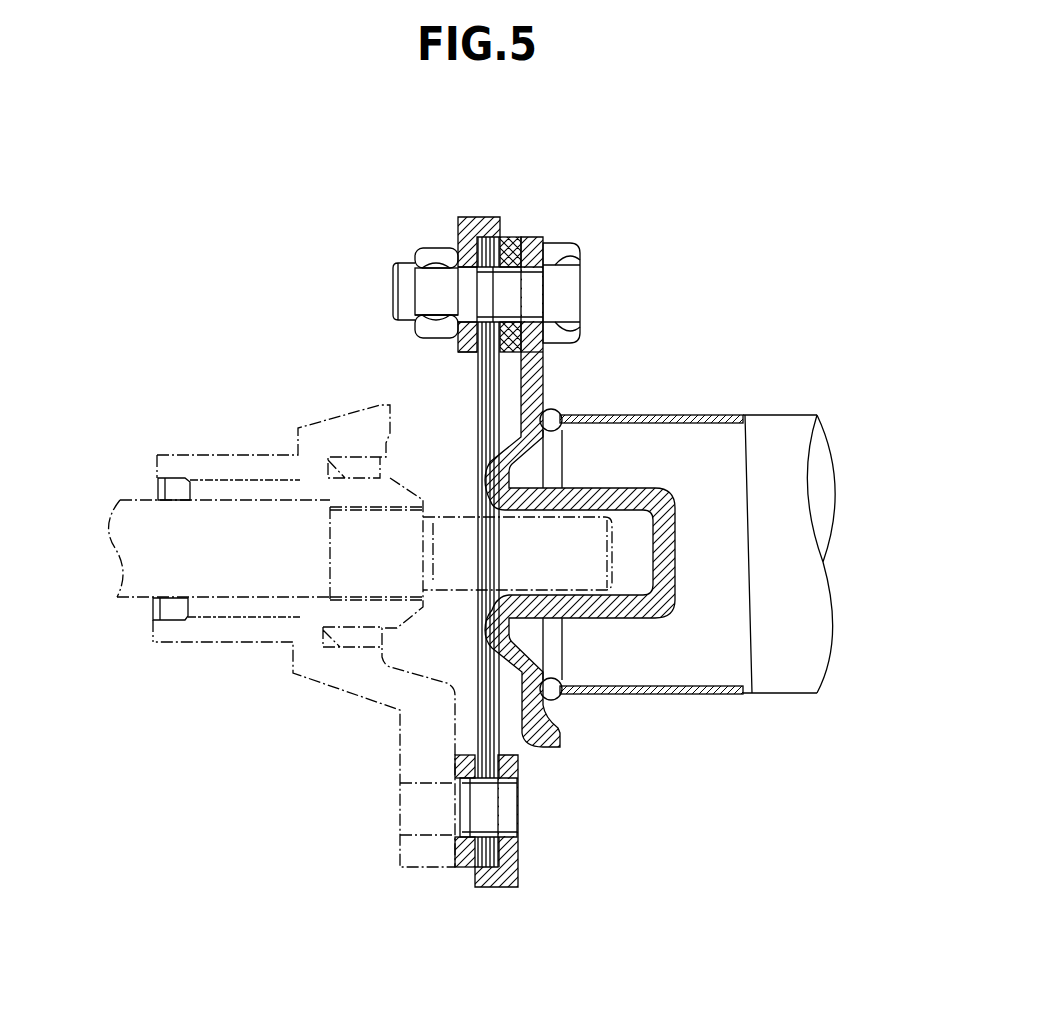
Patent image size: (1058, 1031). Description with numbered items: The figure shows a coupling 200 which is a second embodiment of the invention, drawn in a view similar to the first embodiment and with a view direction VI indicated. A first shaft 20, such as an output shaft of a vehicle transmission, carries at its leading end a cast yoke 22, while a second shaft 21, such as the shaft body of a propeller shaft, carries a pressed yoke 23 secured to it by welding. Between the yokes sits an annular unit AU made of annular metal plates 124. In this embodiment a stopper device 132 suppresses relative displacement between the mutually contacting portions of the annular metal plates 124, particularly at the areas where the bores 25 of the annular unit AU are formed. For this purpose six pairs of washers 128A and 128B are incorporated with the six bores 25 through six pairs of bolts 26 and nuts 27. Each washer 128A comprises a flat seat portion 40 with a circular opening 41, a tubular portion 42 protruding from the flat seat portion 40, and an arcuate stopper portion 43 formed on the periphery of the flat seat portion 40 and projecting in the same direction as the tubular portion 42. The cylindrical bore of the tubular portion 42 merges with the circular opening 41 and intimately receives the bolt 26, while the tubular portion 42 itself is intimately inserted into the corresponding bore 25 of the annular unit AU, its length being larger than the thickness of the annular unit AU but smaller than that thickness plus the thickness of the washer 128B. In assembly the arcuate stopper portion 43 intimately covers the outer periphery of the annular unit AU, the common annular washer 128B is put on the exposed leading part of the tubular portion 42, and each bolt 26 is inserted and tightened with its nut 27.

The coupling 200 is at (645, 147).
The first shaft 20 is at (230, 583).
The second shaft 21 is at (657, 693).
The cast yoke 22 is at (355, 678).
The pressed yoke 23 is at (540, 367).
The bore 25 is at (547, 283).
The bolt 26 is at (567, 307).
The nut 27 is at (427, 253).
The flat seat portion 40 is at (455, 355).
The circular opening 41 is at (422, 323).
The tubular portion 42 is at (540, 343).
The arcuate stopper portion 43 is at (512, 220).
The stopper device 132 is at (479, 242).
The annular metal plates 124 is at (496, 413).
The washer 128A is at (444, 259).
The washer 128B is at (513, 238).
The annular unit AU is at (507, 737).
The view direction VI is at (340, 242).